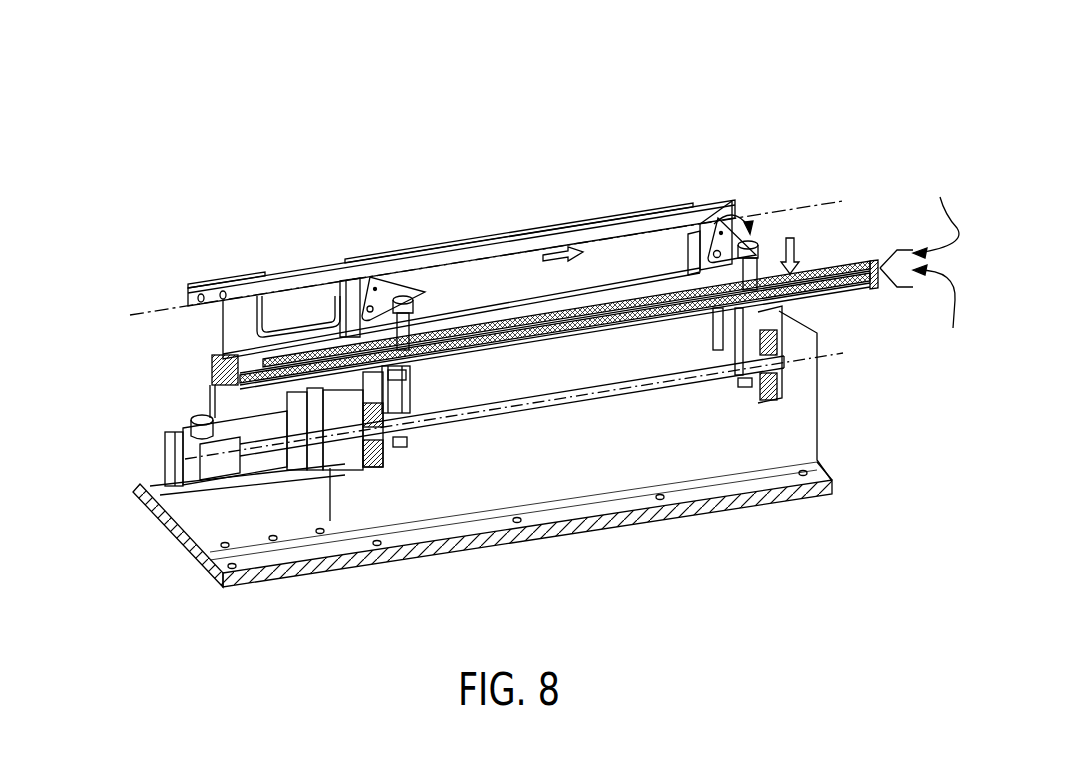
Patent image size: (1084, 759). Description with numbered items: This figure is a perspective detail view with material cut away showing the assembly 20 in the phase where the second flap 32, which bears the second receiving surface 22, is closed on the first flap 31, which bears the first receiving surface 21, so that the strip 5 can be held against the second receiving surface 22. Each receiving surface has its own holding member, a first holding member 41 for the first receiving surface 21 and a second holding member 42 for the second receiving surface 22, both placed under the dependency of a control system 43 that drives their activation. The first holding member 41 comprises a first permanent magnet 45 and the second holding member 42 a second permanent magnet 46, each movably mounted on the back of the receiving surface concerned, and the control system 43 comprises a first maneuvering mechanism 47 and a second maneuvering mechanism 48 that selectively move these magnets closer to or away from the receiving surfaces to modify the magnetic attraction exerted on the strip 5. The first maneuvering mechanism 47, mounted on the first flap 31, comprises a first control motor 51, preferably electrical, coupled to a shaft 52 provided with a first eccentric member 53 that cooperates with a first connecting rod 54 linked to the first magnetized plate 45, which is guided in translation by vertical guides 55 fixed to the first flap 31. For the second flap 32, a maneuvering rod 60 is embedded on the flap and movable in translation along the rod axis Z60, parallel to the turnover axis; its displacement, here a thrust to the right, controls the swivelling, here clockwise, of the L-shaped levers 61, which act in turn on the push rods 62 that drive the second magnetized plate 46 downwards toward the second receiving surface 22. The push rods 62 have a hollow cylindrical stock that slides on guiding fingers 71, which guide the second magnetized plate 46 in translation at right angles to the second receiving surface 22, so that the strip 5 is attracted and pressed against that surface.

The sample distribution system 20 is at (217, 160).
The first receiving surface 21 is at (922, 309).
The second receiving surface 22 is at (919, 220).
The first flap 31 is at (223, 384).
The second flap 32 is at (220, 367).
The first holding member 41 is at (539, 358).
The second holding member 42 is at (613, 302).
The control system 43 is at (136, 432).
The first permanent magnet 45 is at (850, 284).
The second permanent magnet 46 is at (852, 266).
The first maneuvering mechanism 47 is at (389, 470).
The second maneuvering mechanism 48 is at (458, 240).
The strip 5 is at (518, 322).
The first control motor 51 is at (168, 478).
The shaft 52 is at (563, 403).
The first eccentric member 53 is at (395, 418).
The first connecting rod 54 is at (410, 387).
The guides 55 is at (712, 324).
The maneuvering rod 60 is at (302, 277).
The lever 61 is at (377, 279).
The push rod 62 is at (403, 296).
The guiding finger 71 is at (412, 333).
The rod axis Z60 is at (793, 206).